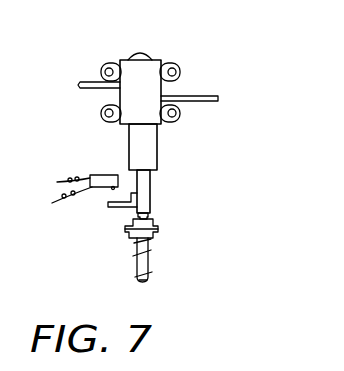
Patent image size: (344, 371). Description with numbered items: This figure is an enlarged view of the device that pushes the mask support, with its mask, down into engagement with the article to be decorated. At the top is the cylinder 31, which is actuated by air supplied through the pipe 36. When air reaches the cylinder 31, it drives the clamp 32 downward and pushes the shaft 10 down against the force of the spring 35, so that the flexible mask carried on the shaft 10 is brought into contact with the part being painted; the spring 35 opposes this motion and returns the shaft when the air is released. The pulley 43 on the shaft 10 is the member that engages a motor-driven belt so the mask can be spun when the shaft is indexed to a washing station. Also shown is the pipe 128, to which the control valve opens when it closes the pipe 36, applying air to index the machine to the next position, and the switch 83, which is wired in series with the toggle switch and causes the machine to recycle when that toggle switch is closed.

The cylinder 31 is at (152, 94).
The pipe 36 is at (90, 82).
The pipe 128 is at (202, 102).
The clamp 32 is at (147, 190).
The switch 83 is at (100, 175).
The pulley 43 is at (149, 220).
The spring 35 is at (137, 260).
The shaft 10 is at (145, 277).